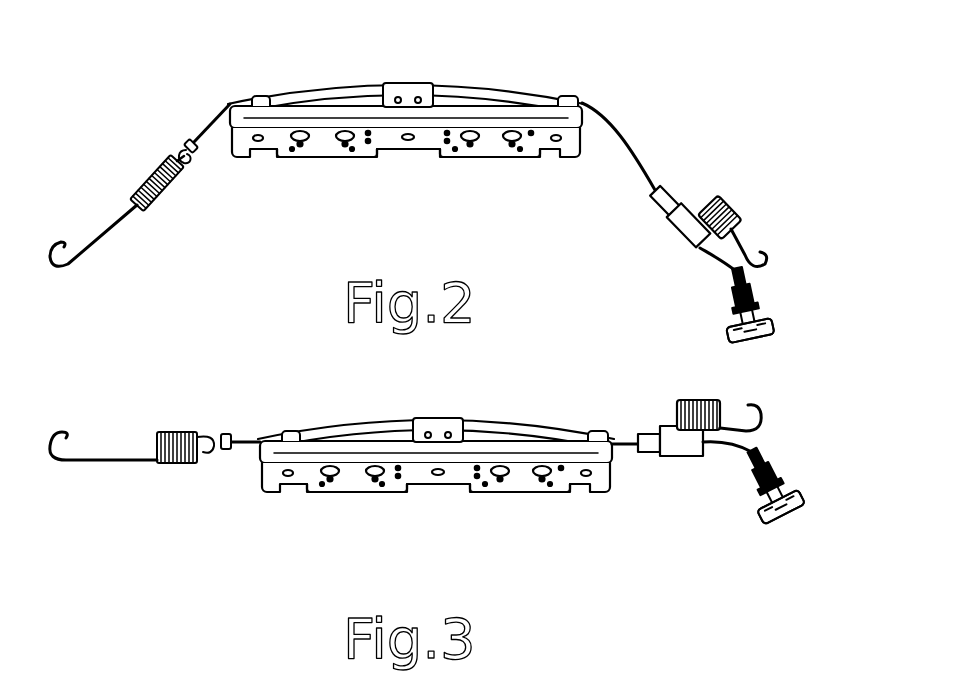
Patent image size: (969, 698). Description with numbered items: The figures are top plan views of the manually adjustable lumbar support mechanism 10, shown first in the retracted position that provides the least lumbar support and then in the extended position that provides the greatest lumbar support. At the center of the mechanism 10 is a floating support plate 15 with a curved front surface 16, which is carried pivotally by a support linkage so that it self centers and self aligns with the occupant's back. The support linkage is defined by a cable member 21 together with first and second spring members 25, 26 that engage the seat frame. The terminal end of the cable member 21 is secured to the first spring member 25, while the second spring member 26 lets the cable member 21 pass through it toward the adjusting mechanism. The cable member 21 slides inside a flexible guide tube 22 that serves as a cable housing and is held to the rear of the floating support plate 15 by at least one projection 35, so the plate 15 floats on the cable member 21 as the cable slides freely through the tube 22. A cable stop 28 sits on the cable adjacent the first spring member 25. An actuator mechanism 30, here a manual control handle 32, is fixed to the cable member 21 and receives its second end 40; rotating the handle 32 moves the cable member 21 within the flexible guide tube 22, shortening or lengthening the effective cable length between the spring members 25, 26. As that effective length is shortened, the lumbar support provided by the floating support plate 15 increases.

In FIG. 2, the adjustable lumbar support mechanism 10 is at (273, 70).
In FIG. 2, the floating support plate 15 is at (453, 162).
In FIG. 3, the floating support plate 15 is at (452, 492).
In FIG. 2, the curved front surface 16 is at (540, 152).
In FIG. 3, the curved front surface 16 is at (360, 494).
In FIG. 2, the cable member 21 is at (216, 126).
In FIG. 3, the cable member 21 is at (246, 448).
In FIG. 2, the flexible guide tube 22 is at (476, 91).
In FIG. 3, the flexible guide tube 22 is at (494, 424).
In FIG. 2, the first spring member 25 is at (128, 213).
In FIG. 3, the first spring member 25 is at (172, 432).
In FIG. 2, the second spring member 26 is at (726, 197).
In FIG. 3, the second spring member 26 is at (762, 413).
In FIG. 2, the cable stop 28 is at (191, 141).
In FIG. 3, the cable stop 28 is at (227, 433).
In FIG. 2, the actuator mechanism 30 is at (783, 293).
In FIG. 3, the actuator mechanism 30 is at (818, 507).
In FIG. 2, the manual control handle 32 is at (755, 344).
In FIG. 3, the manual control handle 32 is at (779, 524).
In FIG. 2, the projection 35 is at (406, 92).
In FIG. 3, the projection 35 is at (437, 422).
In FIG. 2, the second end of the cable member 40 is at (732, 276).
In FIG. 3, the second end of the cable member 40 is at (747, 458).